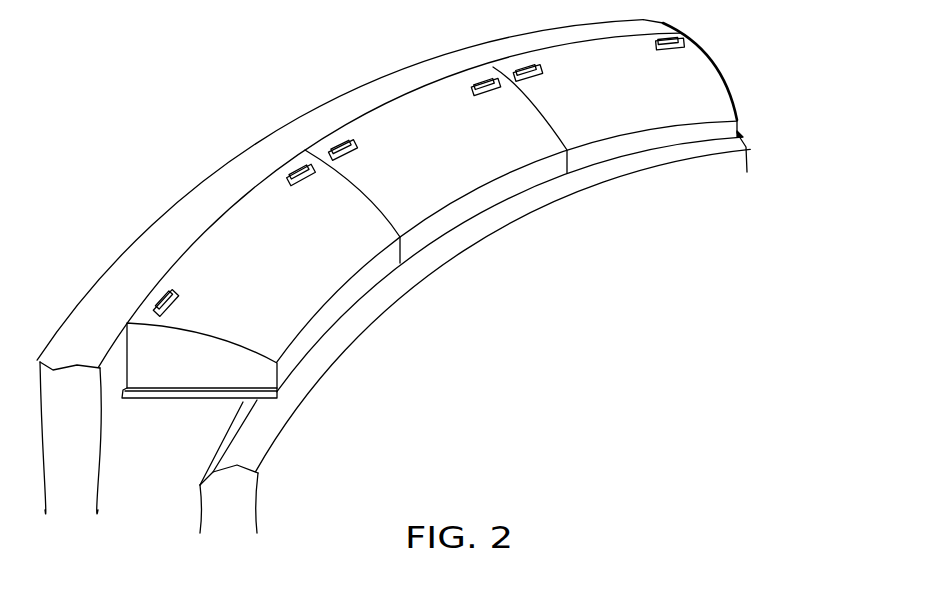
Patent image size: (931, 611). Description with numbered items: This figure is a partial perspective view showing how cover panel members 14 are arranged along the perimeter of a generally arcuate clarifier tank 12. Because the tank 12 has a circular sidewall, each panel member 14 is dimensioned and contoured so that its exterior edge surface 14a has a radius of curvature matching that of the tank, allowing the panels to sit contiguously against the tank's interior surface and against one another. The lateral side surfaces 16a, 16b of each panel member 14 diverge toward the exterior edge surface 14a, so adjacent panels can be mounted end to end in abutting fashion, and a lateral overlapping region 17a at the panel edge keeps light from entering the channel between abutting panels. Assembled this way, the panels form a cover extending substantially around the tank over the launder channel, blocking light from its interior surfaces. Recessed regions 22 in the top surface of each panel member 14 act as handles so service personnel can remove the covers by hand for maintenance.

The tank 12 is at (293, 124).
The panel member 14 is at (292, 277).
The exterior edge surface 14a is at (380, 107).
The lateral side surface 16a is at (193, 377).
The lateral side surface 16b is at (725, 79).
The lateral overlapping region 17a is at (277, 396).
The recessed region 22 is at (292, 172).